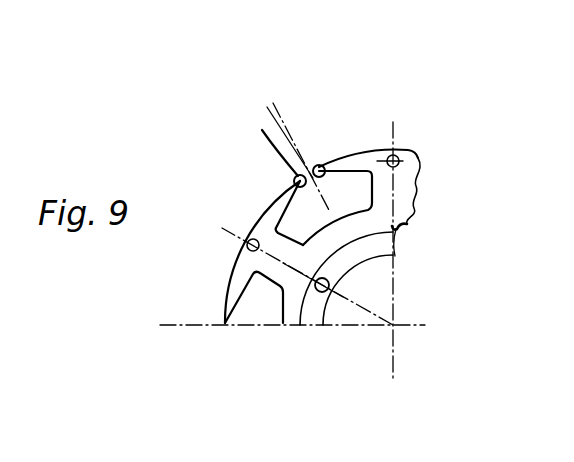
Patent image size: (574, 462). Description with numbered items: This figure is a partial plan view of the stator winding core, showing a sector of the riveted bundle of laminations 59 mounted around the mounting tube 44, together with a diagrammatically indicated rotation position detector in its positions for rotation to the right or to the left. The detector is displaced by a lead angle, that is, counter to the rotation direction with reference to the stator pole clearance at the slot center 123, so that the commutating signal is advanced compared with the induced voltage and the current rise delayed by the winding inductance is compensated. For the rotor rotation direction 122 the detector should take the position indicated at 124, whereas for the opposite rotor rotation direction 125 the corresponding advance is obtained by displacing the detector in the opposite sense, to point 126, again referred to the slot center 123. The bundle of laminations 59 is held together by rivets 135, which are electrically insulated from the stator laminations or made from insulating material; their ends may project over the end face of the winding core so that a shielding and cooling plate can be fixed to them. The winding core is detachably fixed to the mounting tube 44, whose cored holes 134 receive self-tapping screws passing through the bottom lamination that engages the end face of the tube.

The mounting tube 44 is at (373, 249).
The bundle of laminations 59 is at (291, 303).
The rotor rotation direction 122 is at (334, 129).
The slot center 123 is at (272, 112).
The detector position for rotation direction 122 124 is at (313, 166).
The opposite rotor rotation direction 125 is at (268, 166).
The detector position for opposite rotation direction 126 is at (262, 130).
The cored hole 134 is at (328, 292).
The rivet 135 is at (247, 246).